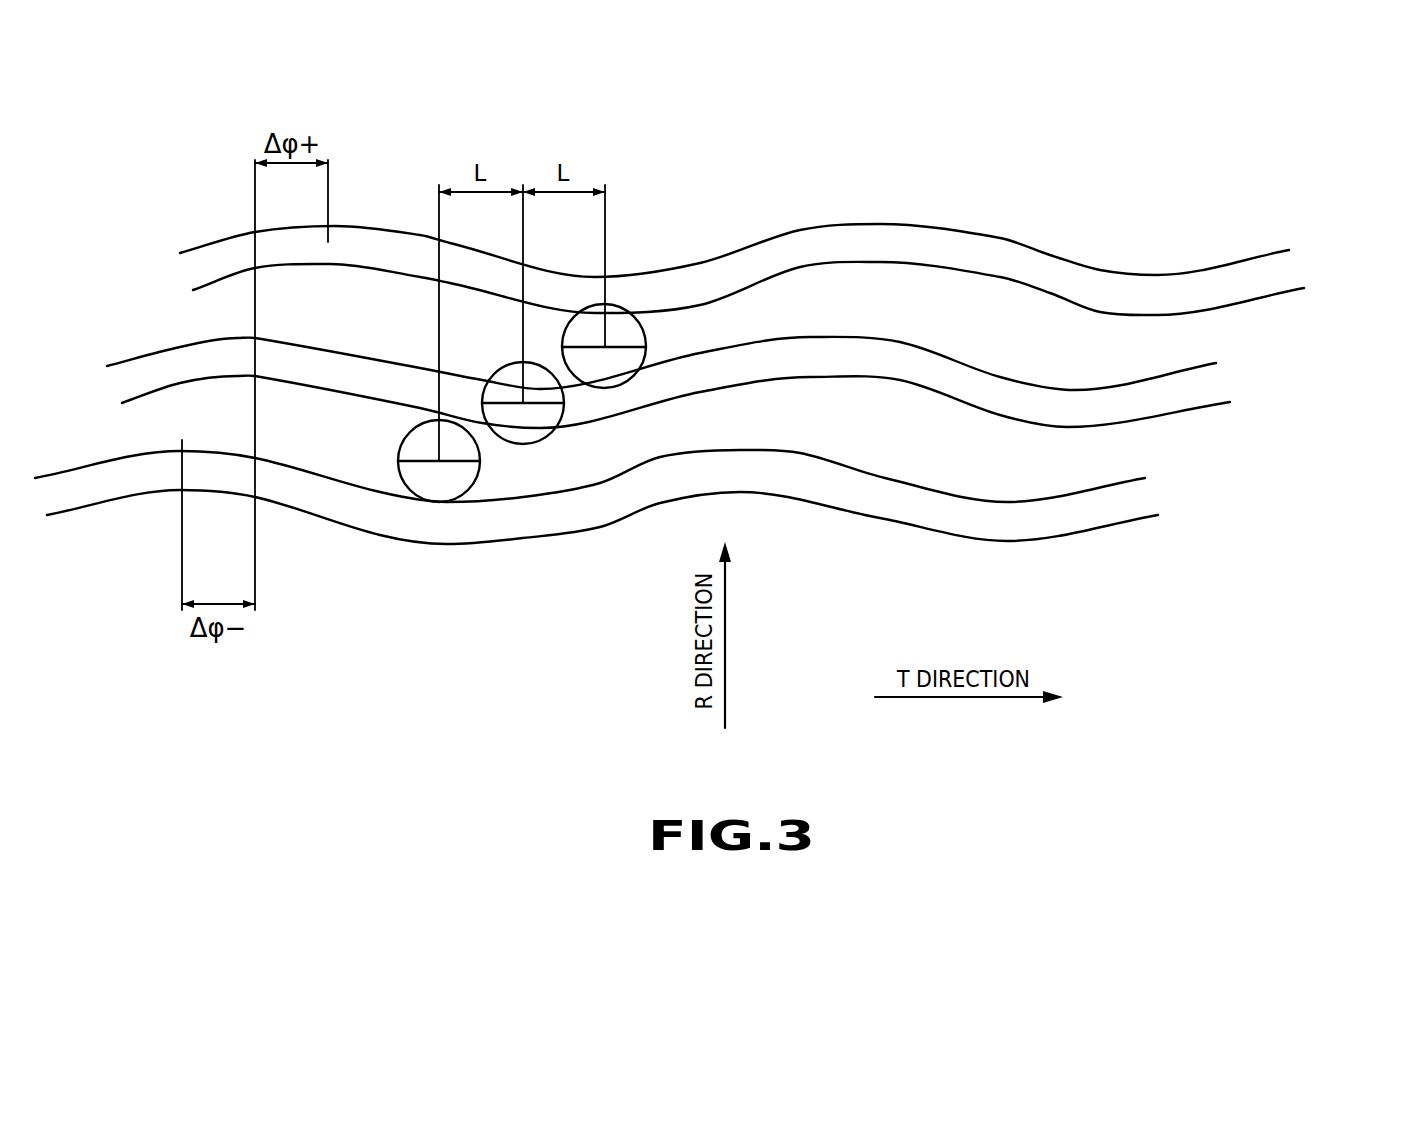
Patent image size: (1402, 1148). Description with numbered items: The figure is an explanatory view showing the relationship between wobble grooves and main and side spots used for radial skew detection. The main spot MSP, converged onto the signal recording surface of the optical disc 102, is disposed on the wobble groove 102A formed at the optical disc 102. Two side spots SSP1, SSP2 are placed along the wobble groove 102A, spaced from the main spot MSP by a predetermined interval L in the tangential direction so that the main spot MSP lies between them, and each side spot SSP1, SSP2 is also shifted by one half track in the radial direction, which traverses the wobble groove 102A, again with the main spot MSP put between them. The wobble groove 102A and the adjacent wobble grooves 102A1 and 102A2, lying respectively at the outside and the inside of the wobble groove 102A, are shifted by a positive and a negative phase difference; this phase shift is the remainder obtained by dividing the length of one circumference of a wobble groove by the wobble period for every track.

The optical disc 102 is at (1153, 258).
The wobble groove 102A1 is at (1230, 293).
The wobble groove 102A is at (1158, 407).
The wobble groove 102A2 is at (1085, 520).
The side spot SSP1 is at (623, 328).
The main spot MSP is at (527, 435).
The side spot SSP2 is at (433, 492).